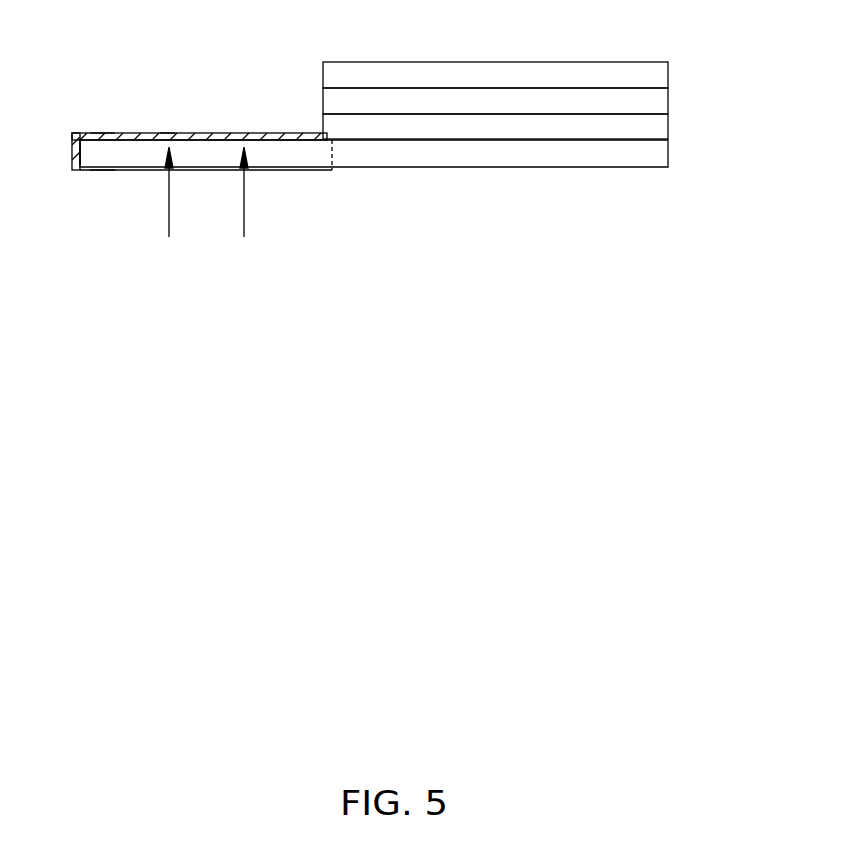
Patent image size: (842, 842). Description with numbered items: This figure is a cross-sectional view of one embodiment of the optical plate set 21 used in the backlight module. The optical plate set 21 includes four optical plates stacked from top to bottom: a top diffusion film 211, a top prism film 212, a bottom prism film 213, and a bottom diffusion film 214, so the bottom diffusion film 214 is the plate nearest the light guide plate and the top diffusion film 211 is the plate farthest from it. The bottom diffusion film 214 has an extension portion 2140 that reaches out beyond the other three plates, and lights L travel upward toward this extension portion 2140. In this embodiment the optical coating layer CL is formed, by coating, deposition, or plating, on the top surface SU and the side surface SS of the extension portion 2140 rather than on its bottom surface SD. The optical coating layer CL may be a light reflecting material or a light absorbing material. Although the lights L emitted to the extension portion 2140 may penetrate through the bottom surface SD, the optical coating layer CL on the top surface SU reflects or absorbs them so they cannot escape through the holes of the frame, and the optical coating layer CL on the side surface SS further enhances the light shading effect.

The optical plate set 21 is at (439, 114).
The top diffusion film 211 is at (663, 75).
The top prism film 212 is at (663, 102).
The bottom prism film 213 is at (663, 128).
The bottom diffusion film 214 is at (417, 154).
The extension portion 2140 is at (127, 133).
The optical coating layer CL is at (167, 133).
The top surface SU is at (102, 132).
The bottom surface SD is at (100, 170).
The side surface SS is at (82, 149).
The lights L is at (209, 206).